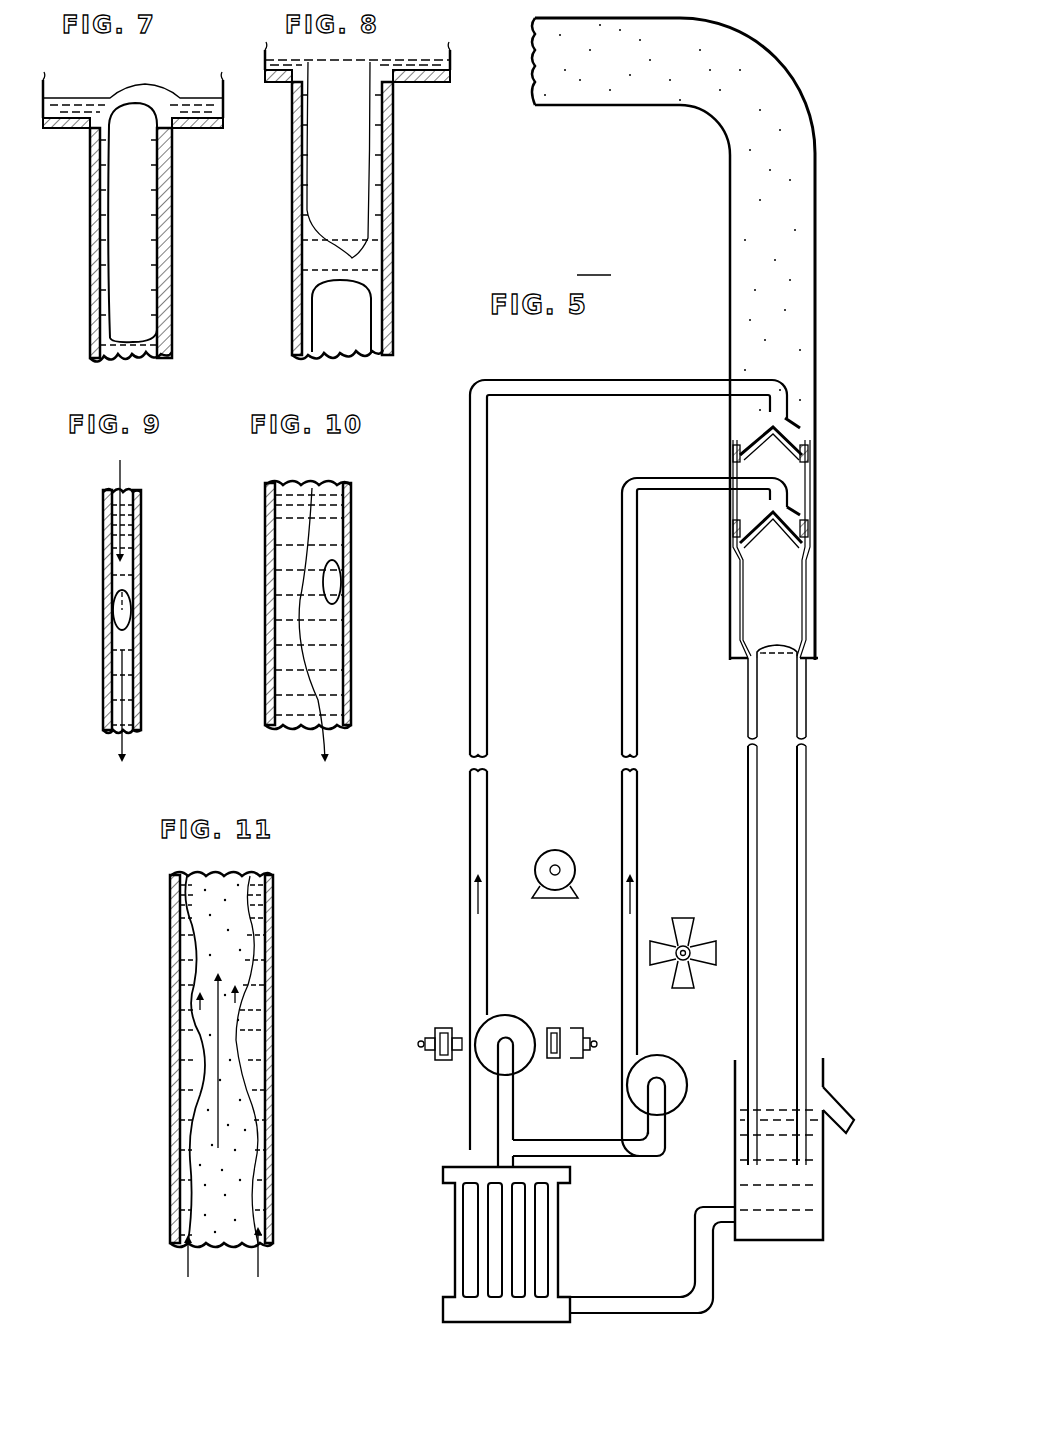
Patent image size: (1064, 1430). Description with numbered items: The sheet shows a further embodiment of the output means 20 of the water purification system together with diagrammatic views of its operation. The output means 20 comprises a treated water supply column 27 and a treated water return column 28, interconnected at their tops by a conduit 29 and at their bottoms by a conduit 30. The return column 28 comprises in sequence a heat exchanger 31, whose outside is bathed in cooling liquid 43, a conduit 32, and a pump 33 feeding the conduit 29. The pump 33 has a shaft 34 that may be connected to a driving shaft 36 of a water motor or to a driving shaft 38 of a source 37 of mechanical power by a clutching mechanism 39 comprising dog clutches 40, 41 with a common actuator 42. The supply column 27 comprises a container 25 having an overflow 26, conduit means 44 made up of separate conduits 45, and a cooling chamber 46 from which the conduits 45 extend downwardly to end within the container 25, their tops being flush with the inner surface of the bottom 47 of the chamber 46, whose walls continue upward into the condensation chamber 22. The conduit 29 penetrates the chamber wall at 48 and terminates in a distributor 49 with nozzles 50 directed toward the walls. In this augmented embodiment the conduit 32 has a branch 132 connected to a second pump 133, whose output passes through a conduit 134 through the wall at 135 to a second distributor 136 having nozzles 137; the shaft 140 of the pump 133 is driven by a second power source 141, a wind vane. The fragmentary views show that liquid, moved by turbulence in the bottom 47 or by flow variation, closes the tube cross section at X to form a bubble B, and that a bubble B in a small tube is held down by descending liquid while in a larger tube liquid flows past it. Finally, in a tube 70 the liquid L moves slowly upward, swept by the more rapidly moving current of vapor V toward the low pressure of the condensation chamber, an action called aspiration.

In FIG. 5, the output means 20 is at (594, 263).
In FIG. 5, the condensation chamber 22 is at (610, 106).
In FIG. 5, the container 25 is at (792, 1240).
In FIG. 5, the overflow 26 is at (840, 1110).
In FIG. 5, the treated water supply column 27 is at (716, 649).
In FIG. 5, the treated water return column 28 is at (647, 732).
In FIG. 5, the conduit 29 is at (600, 380).
In FIG. 5, the conduit 30 is at (705, 1300).
In FIG. 5, the heat exchanger 31 is at (455, 1221).
In FIG. 5, the conduit 32 is at (498, 1118).
In FIG. 5, the pump 33 is at (500, 1016).
In FIG. 5, the shaft 34 is at (470, 1040).
In FIG. 5, the driving shaft 36 is at (600, 1044).
In FIG. 5, the source of mechanical power 37 is at (555, 850).
In FIG. 5, the driving shaft 38 is at (600, 1040).
In FIG. 5, the clutching mechanism 39 is at (466, 1086).
In FIG. 5, the dog clutch 40 is at (440, 1028).
In FIG. 5, the dog clutch 41 is at (555, 1027).
In FIG. 5, the common actuator 42 is at (558, 1088).
In FIG. 5, the cooling liquid 43 is at (447, 1340).
In FIG. 5, the conduit means 44 is at (777, 831).
In FIG. 7, the conduits 45 is at (90, 296).
In FIG. 8, the conduits 45 is at (393, 248).
In FIG. 5, the conduits 45 is at (756, 878).
In FIG. 5, the cooling chamber 46 is at (818, 606).
In FIG. 7, the bottom 47 is at (72, 128).
In FIG. 8, the bottom 47 is at (427, 82).
In FIG. 5, the bottom 47 is at (777, 662).
In FIG. 5, the wall penetration 48 is at (730, 380).
In FIG. 5, the distributor 49 is at (790, 428).
In FIG. 5, the nozzles 50 is at (748, 440).
In FIG. 11, the tubes 70 is at (268, 970).
In FIG. 5, the branch 132 is at (626, 1157).
In FIG. 5, the second pump 133 is at (670, 1068).
In FIG. 5, the conduit 134 is at (665, 478).
In FIG. 5, the wall penetration 135 is at (745, 490).
In FIG. 5, the second distributor 136 is at (792, 510).
In FIG. 5, the nozzles 137 is at (748, 525).
In FIG. 5, the shaft 140 is at (659, 1082).
In FIG. 5, the second power source 141 is at (690, 940).
In FIG. 7, the bubble B is at (122, 246).
In FIG. 8, the bubble B is at (326, 334).
In FIG. 9, the bubble B is at (113, 613).
In FIG. 10, the bubble B is at (343, 581).
In FIG. 7, the closure location X is at (134, 95).
In FIG. 8, the closure location X is at (332, 265).
In FIG. 11, the liquid L is at (247, 1043).
In FIG. 11, the vapor V is at (235, 1106).